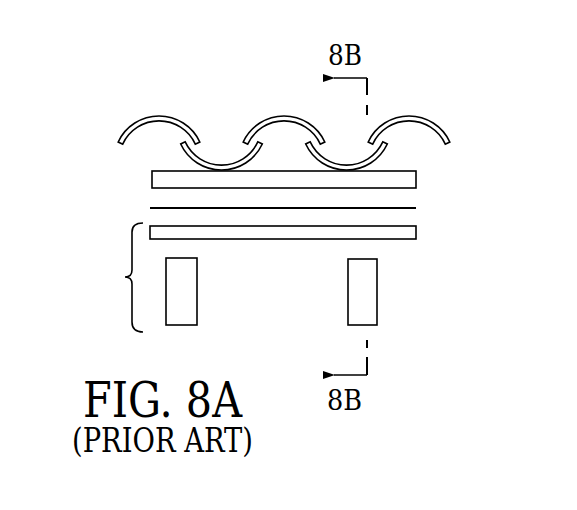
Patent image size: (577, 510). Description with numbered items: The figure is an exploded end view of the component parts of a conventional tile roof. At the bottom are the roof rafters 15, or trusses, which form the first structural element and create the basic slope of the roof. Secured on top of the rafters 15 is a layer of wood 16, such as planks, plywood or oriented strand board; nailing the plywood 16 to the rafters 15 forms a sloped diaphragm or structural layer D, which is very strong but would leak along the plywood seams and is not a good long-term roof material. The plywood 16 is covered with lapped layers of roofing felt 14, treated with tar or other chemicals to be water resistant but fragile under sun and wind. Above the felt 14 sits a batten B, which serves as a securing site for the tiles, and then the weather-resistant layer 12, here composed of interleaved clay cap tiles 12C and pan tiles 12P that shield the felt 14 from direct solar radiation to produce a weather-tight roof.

The layer 12 is at (312, 116).
The cap tiles 12C is at (158, 116).
The pan tiles 12P is at (218, 163).
The batten B is at (420, 182).
The roofing felt 14 is at (402, 207).
The layer of wood 16 is at (420, 232).
The roof rafter 15 is at (381, 292).
The structural layer D is at (125, 277).